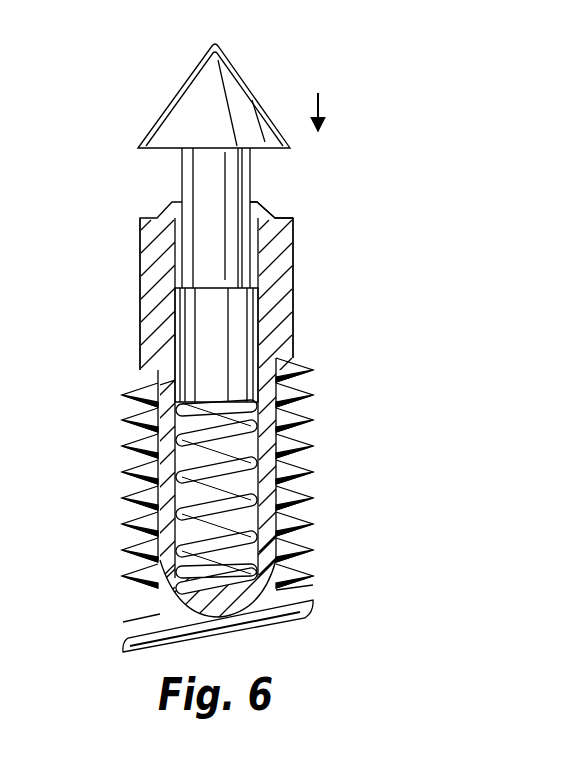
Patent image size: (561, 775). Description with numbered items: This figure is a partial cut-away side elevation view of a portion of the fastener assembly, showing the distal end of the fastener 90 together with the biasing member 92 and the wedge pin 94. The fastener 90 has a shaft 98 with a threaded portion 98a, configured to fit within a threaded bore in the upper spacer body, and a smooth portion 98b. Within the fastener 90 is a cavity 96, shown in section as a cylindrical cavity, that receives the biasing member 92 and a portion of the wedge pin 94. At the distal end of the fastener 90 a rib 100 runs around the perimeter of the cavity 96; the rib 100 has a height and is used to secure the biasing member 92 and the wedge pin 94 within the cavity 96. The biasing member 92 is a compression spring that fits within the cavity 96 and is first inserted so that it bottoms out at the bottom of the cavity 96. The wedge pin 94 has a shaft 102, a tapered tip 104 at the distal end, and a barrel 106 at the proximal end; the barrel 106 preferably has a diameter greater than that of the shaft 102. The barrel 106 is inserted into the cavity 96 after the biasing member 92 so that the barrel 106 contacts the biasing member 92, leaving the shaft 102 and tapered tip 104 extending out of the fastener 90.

The fastener 90 is at (78, 494).
The biasing member 92 is at (298, 443).
The wedge pin 94 is at (133, 126).
The cavity 96 is at (182, 200).
The shaft 98 is at (316, 517).
The threaded portion 98a is at (313, 592).
The smooth portion 98b is at (140, 342).
The rib 100 is at (260, 210).
The shaft 102 is at (217, 242).
The tapered tip 104 is at (250, 83).
The barrel 106 is at (207, 323).